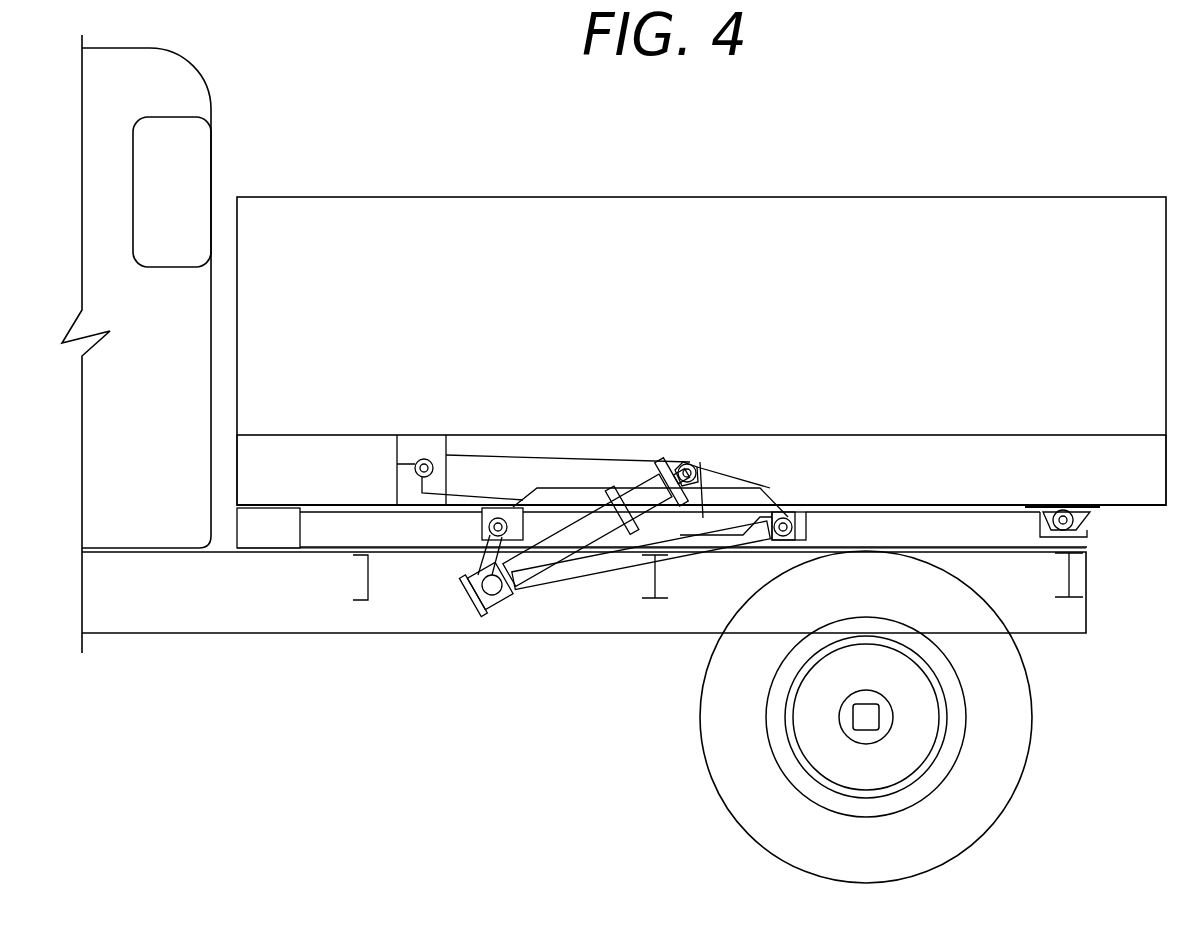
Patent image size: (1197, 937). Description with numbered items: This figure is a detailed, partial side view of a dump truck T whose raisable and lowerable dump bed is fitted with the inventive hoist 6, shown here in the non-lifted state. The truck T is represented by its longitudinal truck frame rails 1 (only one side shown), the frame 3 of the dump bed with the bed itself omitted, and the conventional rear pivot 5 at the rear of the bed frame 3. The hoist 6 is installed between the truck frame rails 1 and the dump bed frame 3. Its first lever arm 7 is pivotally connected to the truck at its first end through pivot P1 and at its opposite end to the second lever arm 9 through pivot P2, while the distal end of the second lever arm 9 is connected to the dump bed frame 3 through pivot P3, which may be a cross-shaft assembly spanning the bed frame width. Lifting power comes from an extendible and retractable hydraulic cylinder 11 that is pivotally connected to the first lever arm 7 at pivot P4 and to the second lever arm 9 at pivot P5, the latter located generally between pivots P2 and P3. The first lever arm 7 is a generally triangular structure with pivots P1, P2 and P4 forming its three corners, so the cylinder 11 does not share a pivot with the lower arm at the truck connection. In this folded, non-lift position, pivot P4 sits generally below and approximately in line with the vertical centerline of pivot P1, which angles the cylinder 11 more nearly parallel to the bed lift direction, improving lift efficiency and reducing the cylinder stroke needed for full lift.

The dump truck T is at (1045, 163).
The truck frame rails 1 is at (243, 598).
The dump bed frame 3 is at (297, 465).
The rear pivot 5 is at (1058, 506).
The hoist 6 is at (455, 528).
The first lever arm 7 is at (686, 533).
The second lever arm 9 is at (552, 467).
The hydraulic cylinder 11 is at (530, 588).
The pivot P1 is at (488, 527).
The pivot P2 is at (788, 514).
The pivot P3 is at (421, 462).
The pivot P4 is at (476, 600).
The pivot P5 is at (685, 460).